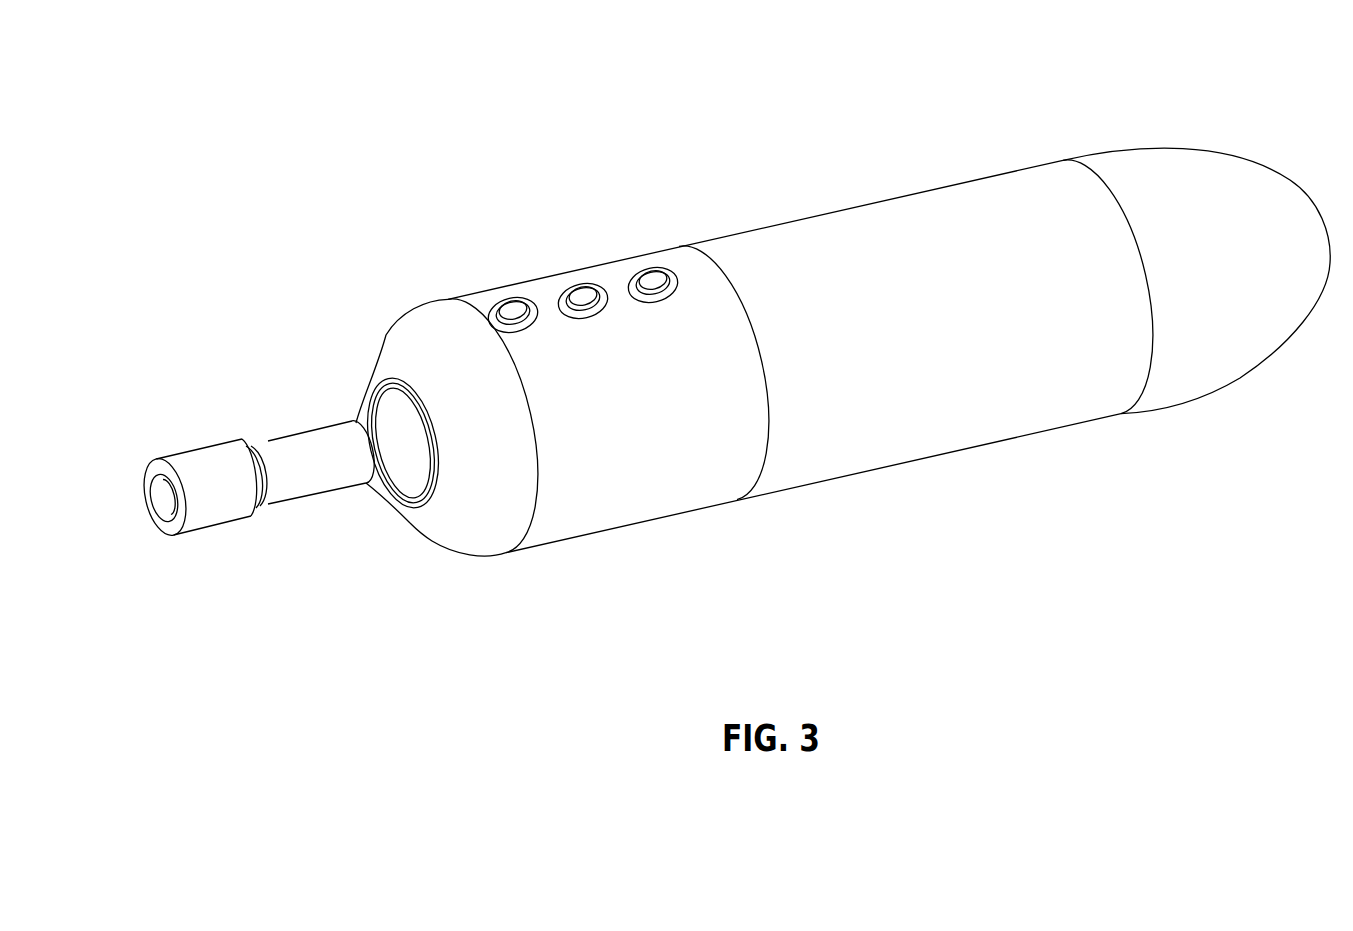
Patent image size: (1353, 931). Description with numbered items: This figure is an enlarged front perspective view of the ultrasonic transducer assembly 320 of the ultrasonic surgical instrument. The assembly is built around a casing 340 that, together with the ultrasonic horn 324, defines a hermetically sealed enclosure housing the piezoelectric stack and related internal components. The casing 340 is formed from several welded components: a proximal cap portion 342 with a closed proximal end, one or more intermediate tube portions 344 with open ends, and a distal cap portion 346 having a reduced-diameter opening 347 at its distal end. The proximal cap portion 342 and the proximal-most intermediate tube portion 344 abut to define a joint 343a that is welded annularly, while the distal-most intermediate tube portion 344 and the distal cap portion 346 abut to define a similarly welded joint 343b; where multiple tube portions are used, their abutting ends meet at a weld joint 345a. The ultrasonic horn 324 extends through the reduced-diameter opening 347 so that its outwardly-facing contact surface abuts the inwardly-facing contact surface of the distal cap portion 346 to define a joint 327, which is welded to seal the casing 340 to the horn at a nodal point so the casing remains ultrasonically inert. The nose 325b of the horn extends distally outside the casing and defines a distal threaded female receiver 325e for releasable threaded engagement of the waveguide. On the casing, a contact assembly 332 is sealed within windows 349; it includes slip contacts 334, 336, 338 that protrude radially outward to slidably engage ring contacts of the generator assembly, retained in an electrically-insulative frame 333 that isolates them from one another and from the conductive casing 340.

The ultrasonic transducer assembly 320 is at (652, 172).
The ultrasonic horn 324 is at (308, 505).
The nose 325b is at (310, 447).
The distal threaded female receiver 325e is at (168, 493).
The joint 327 is at (390, 380).
The contact assembly 332 is at (482, 279).
The electrically-insulative frame 333 is at (538, 324).
The slip contact 334 is at (653, 270).
The slip contact 336 is at (580, 277).
The slip contact 338 is at (510, 297).
The casing 340 is at (962, 427).
The proximal cap portion 342 is at (1253, 180).
The joint 343a is at (1152, 307).
The joint 343b is at (538, 478).
The intermediate tube portion 344 is at (943, 210).
The weld joint 345a is at (768, 423).
The distal cap portion 346 is at (488, 524).
The reduced-diameter opening 347 is at (420, 512).
The window 349 is at (512, 308).